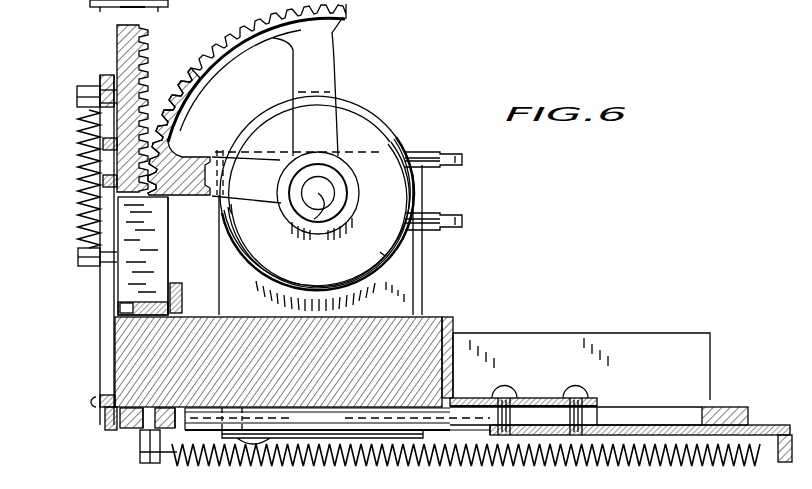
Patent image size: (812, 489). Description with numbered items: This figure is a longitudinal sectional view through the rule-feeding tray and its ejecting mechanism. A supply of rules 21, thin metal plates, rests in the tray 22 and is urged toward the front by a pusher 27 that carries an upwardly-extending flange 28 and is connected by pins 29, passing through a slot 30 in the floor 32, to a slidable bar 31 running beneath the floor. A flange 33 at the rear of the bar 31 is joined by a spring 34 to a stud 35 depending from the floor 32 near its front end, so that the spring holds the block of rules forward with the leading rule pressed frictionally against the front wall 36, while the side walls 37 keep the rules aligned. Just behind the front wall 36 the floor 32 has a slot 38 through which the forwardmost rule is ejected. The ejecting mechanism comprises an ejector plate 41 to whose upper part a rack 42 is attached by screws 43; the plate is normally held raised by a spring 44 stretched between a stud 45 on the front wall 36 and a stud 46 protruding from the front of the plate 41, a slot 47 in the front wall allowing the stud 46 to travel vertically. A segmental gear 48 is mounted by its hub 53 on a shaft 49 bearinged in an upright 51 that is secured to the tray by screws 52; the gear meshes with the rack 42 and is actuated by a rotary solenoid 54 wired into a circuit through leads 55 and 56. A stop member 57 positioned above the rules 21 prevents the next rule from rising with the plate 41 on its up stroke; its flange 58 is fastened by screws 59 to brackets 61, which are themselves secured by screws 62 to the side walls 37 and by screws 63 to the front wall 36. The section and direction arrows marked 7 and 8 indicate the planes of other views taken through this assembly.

The screws 62 is at (97, 5).
The section line arrow 7 is at (95, 20).
The rack 42 is at (117, 45).
The stud 45 is at (100, 87).
The segmental gear 48 is at (213, 43).
The tray 22 is at (348, 12).
The rotary solenoid 54 is at (348, 121).
The hub 53 is at (372, 166).
The shaft 49 is at (318, 205).
The lead 55 is at (446, 164).
The lead 56 is at (462, 222).
The upright 51 is at (415, 250).
The screws 43 is at (110, 139).
The spring 44 is at (77, 202).
The stud 46 is at (90, 267).
The slot 47 is at (107, 285).
The ejector plate 41 is at (143, 256).
The brackets 61 is at (163, 247).
The flange 58 is at (180, 285).
The screws 59 is at (197, 297).
The stop member 57 is at (117, 302).
The front wall 36 is at (105, 342).
The section line arrow 8 is at (61, 378).
The screws 63 is at (100, 398).
The slot 38 is at (135, 430).
The floor 32 is at (135, 433).
The stud 35 is at (152, 463).
The screws 52 is at (337, 425).
The rules 21 is at (430, 314).
The flange 28 is at (450, 330).
The side walls 37 is at (530, 333).
The pusher 27 is at (535, 397).
The pins 29 is at (569, 413).
The slot 30 is at (608, 410).
The slidable bar 31 is at (760, 424).
The flange 33 is at (783, 465).
The spring 34 is at (508, 460).